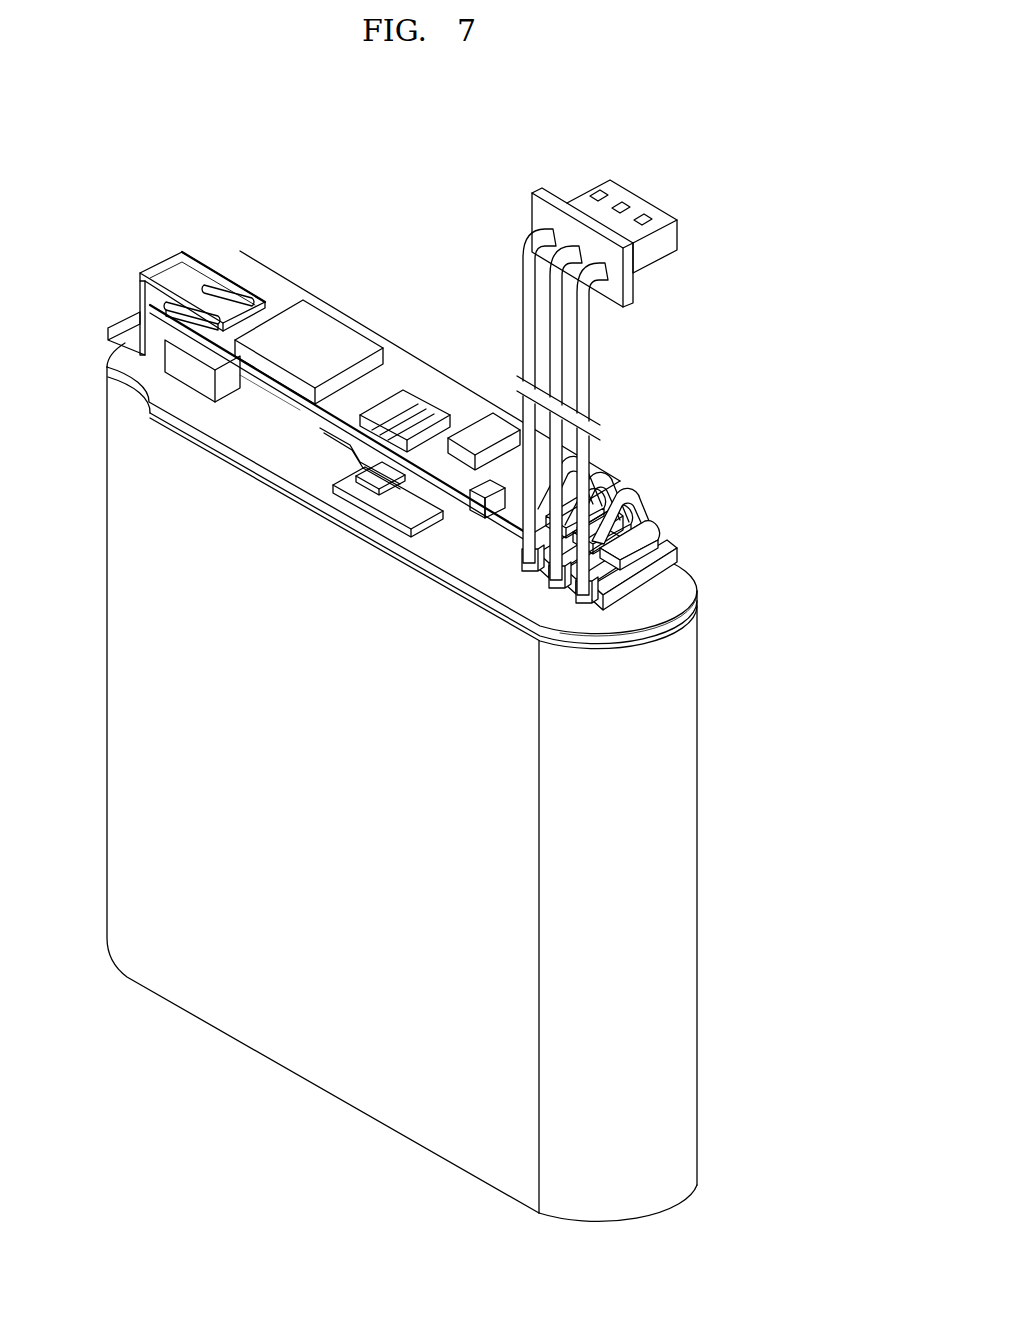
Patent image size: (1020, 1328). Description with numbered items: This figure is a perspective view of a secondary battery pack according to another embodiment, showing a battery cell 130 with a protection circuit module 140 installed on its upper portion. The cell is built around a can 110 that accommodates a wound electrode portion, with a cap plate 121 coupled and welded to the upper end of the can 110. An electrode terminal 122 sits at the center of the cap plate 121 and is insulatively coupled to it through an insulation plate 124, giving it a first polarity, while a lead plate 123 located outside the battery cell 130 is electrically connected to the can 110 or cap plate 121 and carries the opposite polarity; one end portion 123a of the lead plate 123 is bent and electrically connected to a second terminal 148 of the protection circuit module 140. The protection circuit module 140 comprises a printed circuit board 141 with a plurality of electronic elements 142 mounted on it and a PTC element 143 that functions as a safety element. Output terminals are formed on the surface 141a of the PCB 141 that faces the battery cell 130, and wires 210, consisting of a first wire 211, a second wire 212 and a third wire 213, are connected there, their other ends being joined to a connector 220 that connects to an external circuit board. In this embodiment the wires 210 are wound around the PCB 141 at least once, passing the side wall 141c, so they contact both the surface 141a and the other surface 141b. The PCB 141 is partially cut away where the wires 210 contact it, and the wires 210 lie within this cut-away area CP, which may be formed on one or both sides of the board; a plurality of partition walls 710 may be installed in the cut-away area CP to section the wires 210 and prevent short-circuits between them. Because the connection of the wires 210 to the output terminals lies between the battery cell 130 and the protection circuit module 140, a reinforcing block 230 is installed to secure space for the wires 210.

The can 110 is at (680, 853).
The battery cell 130 is at (728, 640).
The cap plate 121 is at (670, 612).
The electrode terminal 122 is at (377, 480).
The lead plate 123 is at (126, 318).
The end portion of the lead plate 123a is at (177, 264).
The insulation plate 124 is at (393, 507).
The protection circuit module 140 is at (420, 346).
The printed circuit board 141 is at (664, 505).
The surface of the PCB facing the battery cell 141a is at (667, 545).
The other surface of the PCB 141b is at (636, 509).
The side wall of the PCB 141c is at (650, 553).
The electronic elements 142 is at (322, 325).
The PTC element 143 is at (327, 448).
The second terminal 148 is at (252, 290).
The wires 210 is at (642, 416).
The first wire 211 is at (540, 378).
The second wire 212 is at (595, 322).
The third wire 213 is at (562, 340).
The connector 220 is at (600, 192).
The reinforcing block 230 is at (172, 360).
The partition walls 710 is at (623, 596).
The cut-away area CP is at (486, 548).